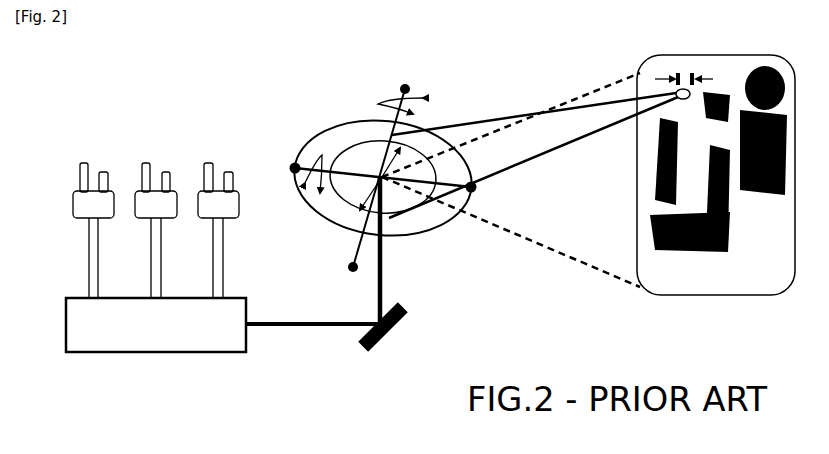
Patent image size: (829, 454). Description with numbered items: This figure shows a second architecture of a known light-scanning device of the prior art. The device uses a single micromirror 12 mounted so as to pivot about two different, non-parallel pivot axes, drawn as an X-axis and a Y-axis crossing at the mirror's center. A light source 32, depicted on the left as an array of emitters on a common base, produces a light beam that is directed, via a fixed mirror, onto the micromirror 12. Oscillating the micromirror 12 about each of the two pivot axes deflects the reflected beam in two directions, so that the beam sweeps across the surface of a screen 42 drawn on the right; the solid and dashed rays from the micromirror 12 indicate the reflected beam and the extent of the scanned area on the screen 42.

The micromirror 12 is at (355, 153).
The light source 32 is at (118, 342).
The screen 42 is at (728, 297).